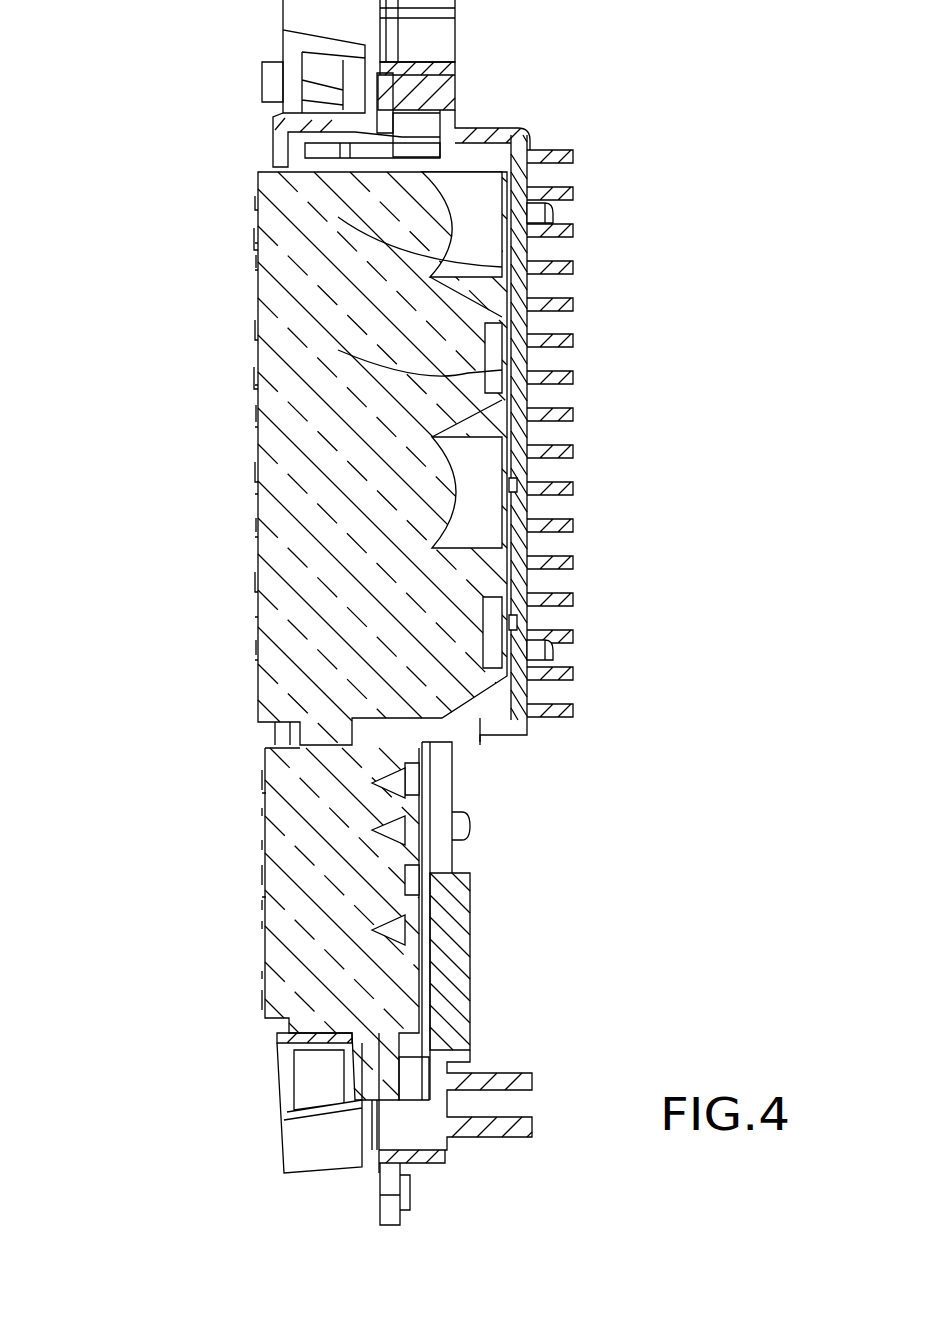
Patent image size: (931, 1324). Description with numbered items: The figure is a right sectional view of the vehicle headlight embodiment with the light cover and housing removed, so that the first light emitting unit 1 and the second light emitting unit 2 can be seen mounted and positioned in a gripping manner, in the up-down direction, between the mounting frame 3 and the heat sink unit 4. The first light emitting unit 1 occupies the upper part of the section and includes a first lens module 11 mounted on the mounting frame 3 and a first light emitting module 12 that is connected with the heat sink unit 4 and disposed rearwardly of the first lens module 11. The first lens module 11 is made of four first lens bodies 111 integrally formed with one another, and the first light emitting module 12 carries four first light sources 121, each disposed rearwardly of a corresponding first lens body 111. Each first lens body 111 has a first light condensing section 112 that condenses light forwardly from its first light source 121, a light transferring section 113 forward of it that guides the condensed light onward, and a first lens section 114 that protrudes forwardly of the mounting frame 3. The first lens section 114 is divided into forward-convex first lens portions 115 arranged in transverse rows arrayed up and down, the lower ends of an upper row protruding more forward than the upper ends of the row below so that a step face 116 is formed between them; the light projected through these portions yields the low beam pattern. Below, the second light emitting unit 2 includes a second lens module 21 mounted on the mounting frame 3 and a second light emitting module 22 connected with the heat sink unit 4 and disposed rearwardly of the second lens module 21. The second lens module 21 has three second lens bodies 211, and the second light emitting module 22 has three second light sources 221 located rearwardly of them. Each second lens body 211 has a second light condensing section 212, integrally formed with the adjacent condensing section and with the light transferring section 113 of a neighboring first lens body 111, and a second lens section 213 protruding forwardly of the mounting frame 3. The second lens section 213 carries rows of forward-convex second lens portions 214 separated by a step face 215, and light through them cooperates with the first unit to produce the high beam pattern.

The first light emitting unit 1 is at (536, 688).
The second light emitting unit 2 is at (440, 1015).
The mounting frame 3 is at (300, 123).
The heat sink unit 4 is at (537, 150).
The first lens module 11 is at (252, 183).
The first light emitting module 12 is at (512, 645).
The second lens module 21 is at (256, 760).
The second light emitting module 22 is at (433, 983).
The first lens body 111 is at (258, 205).
The first light condensing section 112 is at (487, 212).
The light transferring section 113 is at (502, 267).
The first lens section 114 is at (253, 238).
The first lens portion 115 is at (255, 245).
The step face 116 is at (255, 262).
The first light source 121 is at (518, 485).
The second lens body 211 is at (262, 780).
The second light condensing section 212 is at (372, 783).
The second lens section 213 is at (256, 794).
The second lens portion 214 is at (262, 845).
The step face 215 is at (262, 812).
The second light source 221 is at (470, 960).